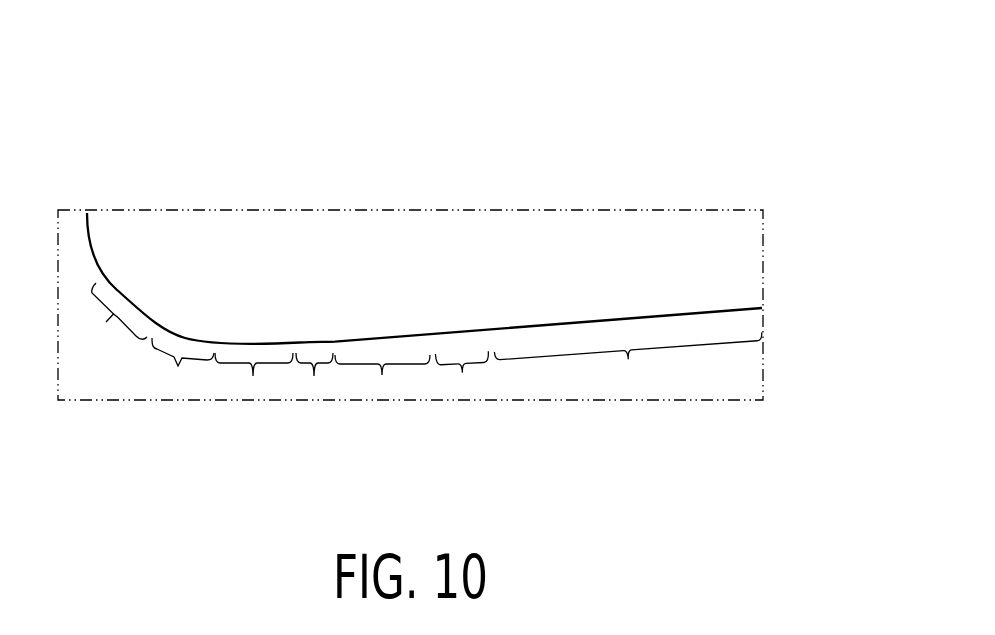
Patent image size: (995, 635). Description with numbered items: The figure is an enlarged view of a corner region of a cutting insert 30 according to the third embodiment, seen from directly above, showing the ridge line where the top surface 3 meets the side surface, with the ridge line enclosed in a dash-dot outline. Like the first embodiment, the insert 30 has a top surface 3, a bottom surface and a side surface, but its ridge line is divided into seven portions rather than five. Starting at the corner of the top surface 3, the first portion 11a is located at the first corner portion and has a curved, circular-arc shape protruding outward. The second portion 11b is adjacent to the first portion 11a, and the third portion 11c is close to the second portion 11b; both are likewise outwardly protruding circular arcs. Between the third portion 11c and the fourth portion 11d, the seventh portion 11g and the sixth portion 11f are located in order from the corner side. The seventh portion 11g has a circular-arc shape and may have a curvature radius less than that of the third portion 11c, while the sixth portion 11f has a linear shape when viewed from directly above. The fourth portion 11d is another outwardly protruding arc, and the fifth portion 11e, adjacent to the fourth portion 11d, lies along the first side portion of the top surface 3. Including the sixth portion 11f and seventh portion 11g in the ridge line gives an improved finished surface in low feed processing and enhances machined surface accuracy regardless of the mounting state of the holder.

The insert 30 is at (222, 107).
The top surface 3 is at (568, 245).
The first portion 11a is at (105, 323).
The second portion 11b is at (178, 367).
The third portion 11c is at (253, 376).
The fourth portion 11d is at (462, 373).
The fifth portion 11e is at (628, 361).
The sixth portion 11f is at (382, 375).
The seventh portion 11g is at (314, 376).